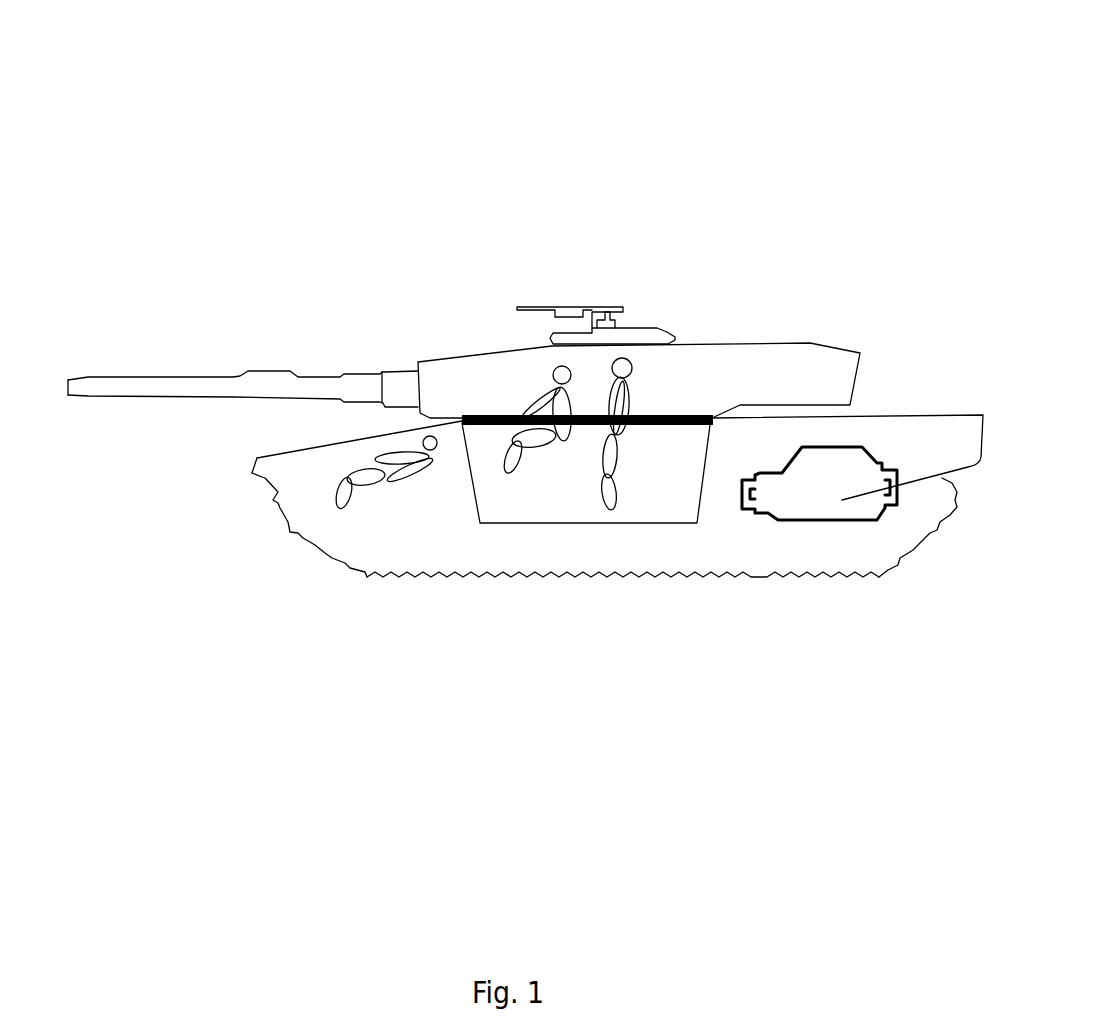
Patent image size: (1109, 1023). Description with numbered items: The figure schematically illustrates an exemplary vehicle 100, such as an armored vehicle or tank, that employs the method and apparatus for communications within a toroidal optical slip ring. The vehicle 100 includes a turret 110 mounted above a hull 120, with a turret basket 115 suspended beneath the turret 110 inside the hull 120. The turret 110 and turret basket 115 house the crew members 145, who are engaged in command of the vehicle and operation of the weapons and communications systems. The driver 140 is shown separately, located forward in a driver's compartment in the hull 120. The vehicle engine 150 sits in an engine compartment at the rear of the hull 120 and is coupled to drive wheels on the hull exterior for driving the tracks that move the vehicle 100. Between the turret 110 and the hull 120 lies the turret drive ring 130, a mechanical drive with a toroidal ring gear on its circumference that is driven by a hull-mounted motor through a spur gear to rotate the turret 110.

The vehicle 100 is at (505, 51).
The turret 110 is at (773, 324).
The hull 120 is at (904, 401).
The turret basket 115 is at (629, 545).
The turret drive ring 130 is at (650, 439).
The driver 140 is at (403, 503).
The crew members 145 is at (545, 469).
The vehicle engine 150 is at (825, 540).